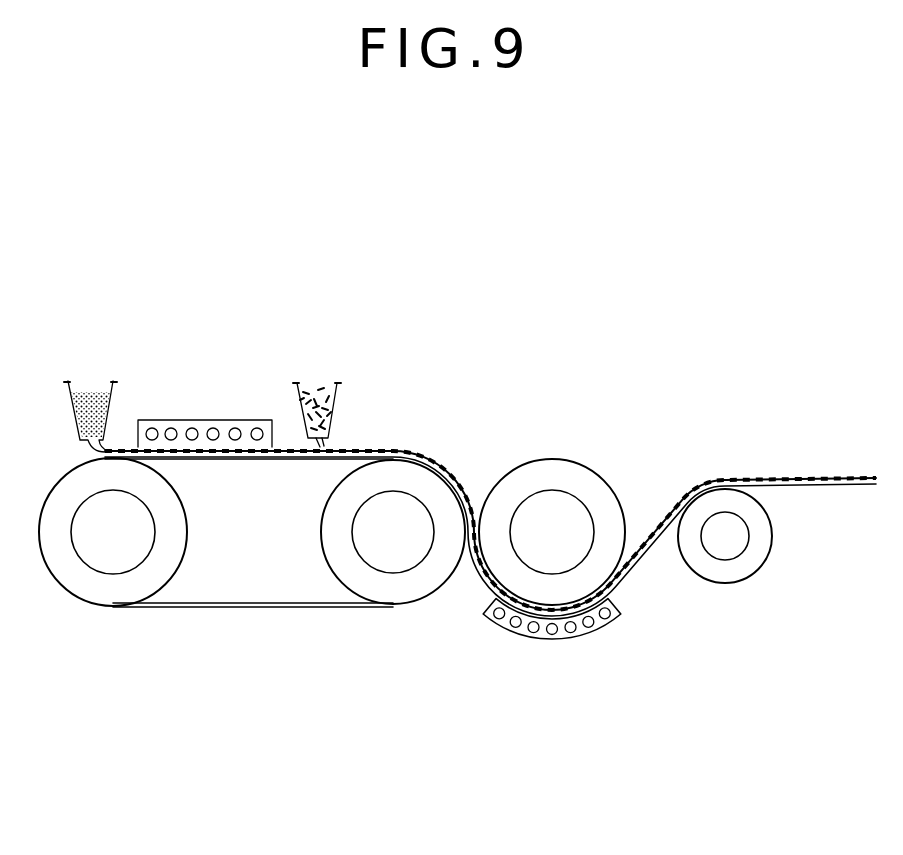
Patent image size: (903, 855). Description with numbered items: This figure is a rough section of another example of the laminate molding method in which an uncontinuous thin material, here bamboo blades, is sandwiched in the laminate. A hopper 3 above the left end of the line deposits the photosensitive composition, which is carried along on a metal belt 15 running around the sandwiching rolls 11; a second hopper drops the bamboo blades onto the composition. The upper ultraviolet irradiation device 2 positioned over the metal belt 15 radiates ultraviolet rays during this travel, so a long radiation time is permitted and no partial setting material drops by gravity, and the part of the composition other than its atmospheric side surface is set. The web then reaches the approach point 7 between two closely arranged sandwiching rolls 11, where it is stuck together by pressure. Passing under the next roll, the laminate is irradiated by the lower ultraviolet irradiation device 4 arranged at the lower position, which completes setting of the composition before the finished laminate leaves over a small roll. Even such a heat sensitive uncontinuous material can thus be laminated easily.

The upper ultraviolet irradiation device 2 is at (180, 422).
The hopper 3 is at (90, 380).
The lower ultraviolet irradiation device 4 is at (577, 637).
The approach point 7 is at (465, 543).
The sandwiching rolls 11 is at (72, 588).
The metal belt 15 is at (250, 465).